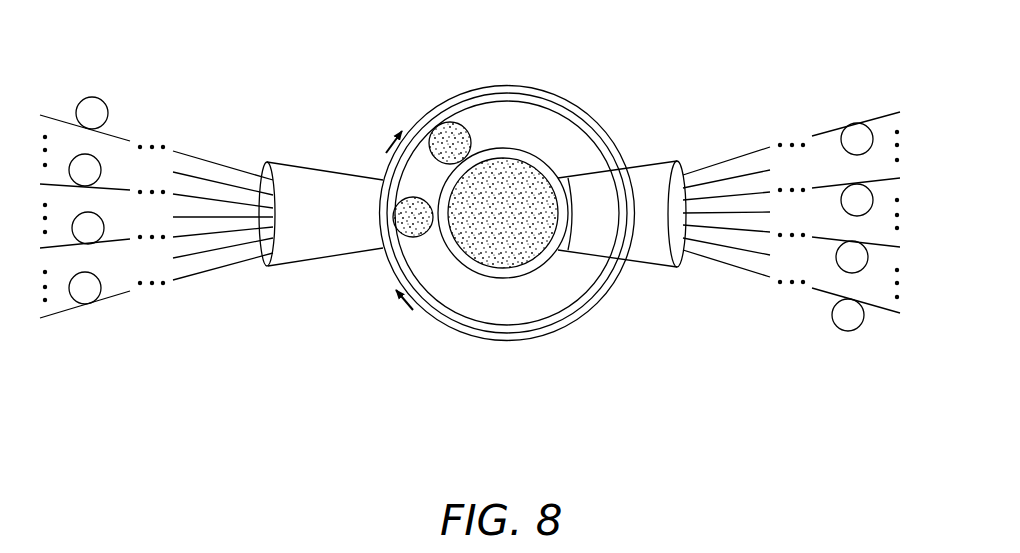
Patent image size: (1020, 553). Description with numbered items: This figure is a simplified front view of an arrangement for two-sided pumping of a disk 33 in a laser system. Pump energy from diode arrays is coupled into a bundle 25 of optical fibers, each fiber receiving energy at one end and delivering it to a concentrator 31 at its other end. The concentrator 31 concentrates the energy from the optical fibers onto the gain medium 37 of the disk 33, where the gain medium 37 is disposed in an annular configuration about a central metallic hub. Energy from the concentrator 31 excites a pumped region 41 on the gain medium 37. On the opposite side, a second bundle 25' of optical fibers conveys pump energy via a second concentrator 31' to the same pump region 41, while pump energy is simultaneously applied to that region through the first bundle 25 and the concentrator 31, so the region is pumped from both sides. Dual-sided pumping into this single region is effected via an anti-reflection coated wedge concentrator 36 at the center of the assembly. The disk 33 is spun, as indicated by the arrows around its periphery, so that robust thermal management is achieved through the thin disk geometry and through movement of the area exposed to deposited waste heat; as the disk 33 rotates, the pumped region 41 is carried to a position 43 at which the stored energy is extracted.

The bundle of optical fibers 25 is at (156, 289).
The second bundle of optical fibers 25' is at (791, 280).
The concentrator 31 is at (318, 261).
The second concentrator 31' is at (635, 258).
The disk 33 is at (590, 300).
The wedge concentrator 36 is at (475, 270).
The gain medium 37 is at (522, 307).
The pumped region 41 is at (410, 210).
The position 43 is at (460, 136).